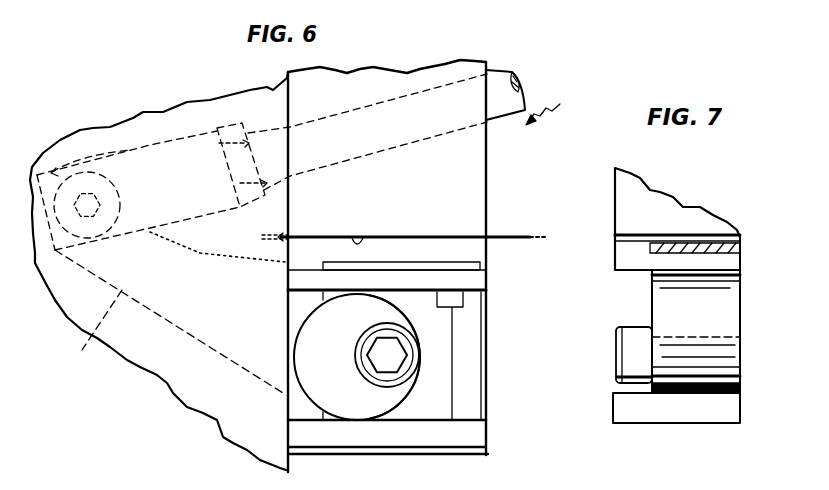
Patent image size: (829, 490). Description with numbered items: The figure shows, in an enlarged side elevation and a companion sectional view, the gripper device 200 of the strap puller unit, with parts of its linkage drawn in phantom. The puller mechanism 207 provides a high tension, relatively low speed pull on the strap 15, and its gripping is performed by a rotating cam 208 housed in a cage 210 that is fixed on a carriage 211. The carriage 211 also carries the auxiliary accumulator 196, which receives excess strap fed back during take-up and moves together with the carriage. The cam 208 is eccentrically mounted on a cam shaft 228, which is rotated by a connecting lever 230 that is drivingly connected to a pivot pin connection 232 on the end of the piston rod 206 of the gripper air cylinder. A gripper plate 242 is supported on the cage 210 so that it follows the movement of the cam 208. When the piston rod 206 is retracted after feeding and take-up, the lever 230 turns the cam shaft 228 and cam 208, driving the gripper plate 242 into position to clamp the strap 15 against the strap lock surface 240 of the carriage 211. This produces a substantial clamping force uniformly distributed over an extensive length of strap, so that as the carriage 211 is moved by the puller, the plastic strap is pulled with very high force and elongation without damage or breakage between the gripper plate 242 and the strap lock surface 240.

In FIG. 6, the strap 15 is at (534, 208).
In FIG. 7, the strap 15 is at (705, 233).
In FIG. 6, the auxiliary accumulator 196 is at (209, 78).
In FIG. 6, the gripper device 200 is at (276, 299).
In FIG. 6, the piston rod 206 is at (495, 75).
In FIG. 6, the puller mechanism 207 is at (562, 104).
In FIG. 6, the rotating cam 208 is at (343, 362).
In FIG. 7, the rotating cam 208 is at (713, 329).
In FIG. 6, the cage 210 is at (488, 284).
In FIG. 7, the cage 210 is at (616, 271).
In FIG. 6, the carriage 211 is at (490, 167).
In FIG. 7, the carriage 211 is at (677, 171).
In FIG. 6, the cam shaft 228 is at (370, 372).
In FIG. 7, the cam shaft 228 is at (630, 340).
In FIG. 6, the connecting lever 230 is at (90, 334).
In FIG. 6, the pivot pin connection 232 is at (99, 176).
In FIG. 6, the strap lock surface 240 is at (363, 238).
In FIG. 6, the gripper plate 242 is at (458, 260).
In FIG. 7, the gripper plate 242 is at (741, 249).